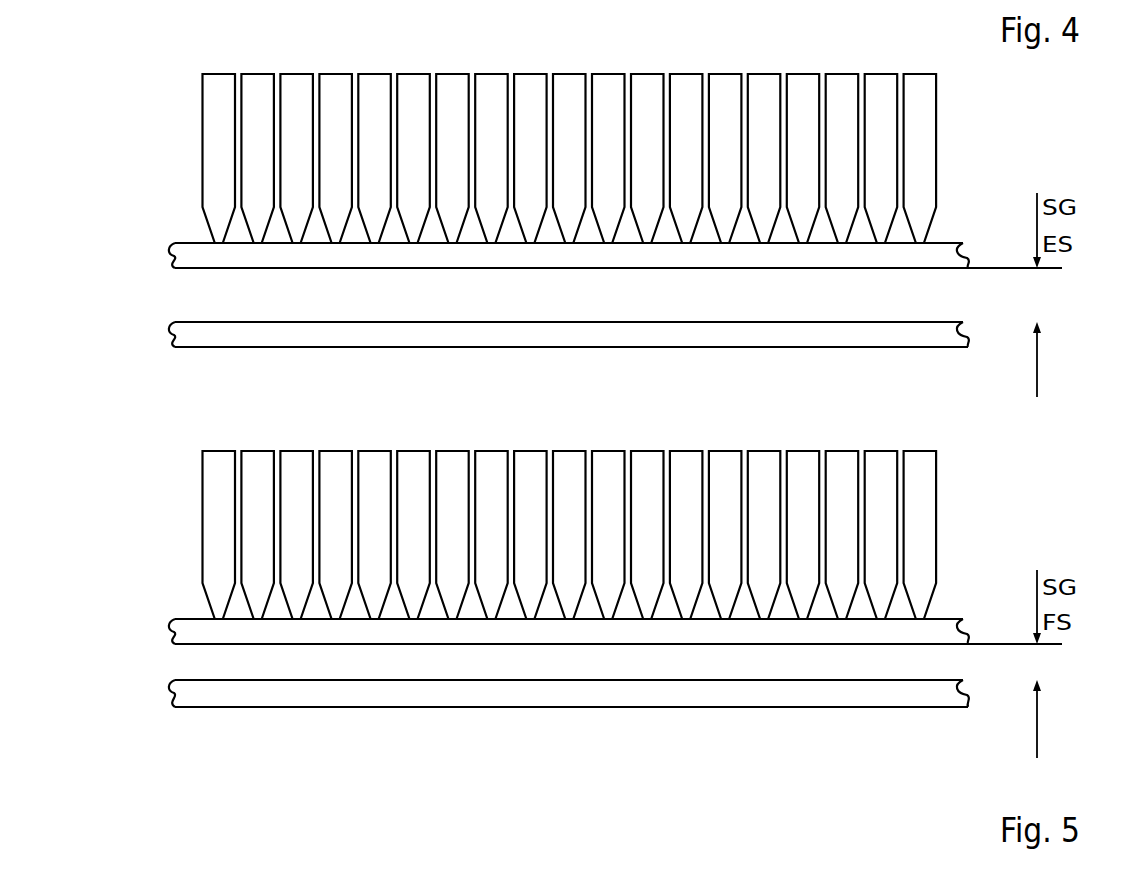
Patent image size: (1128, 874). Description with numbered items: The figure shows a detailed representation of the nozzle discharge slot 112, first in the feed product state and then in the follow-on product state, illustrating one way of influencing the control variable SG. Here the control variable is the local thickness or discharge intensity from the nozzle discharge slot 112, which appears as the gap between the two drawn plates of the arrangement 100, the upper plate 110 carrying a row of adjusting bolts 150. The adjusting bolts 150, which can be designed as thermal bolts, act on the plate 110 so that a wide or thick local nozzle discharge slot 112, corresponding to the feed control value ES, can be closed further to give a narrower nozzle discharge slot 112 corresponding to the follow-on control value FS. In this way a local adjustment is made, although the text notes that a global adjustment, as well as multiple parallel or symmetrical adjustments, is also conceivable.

In FIG. 4, the heat exchanger / thermal device 100 is at (183, 368).
In FIG. 5, the heat exchanger / thermal device 100 is at (175, 738).
In FIG. 4, the base plate / substrate 110 is at (180, 255).
In FIG. 5, the base plate / substrate 110 is at (180, 617).
In FIG. 4, the nozzle discharge slot 112 is at (178, 287).
In FIG. 5, the nozzle discharge slot 112 is at (178, 663).
In FIG. 4, the adjusting bolts 150 is at (917, 83).
In FIG. 5, the adjusting bolts 150 is at (917, 460).